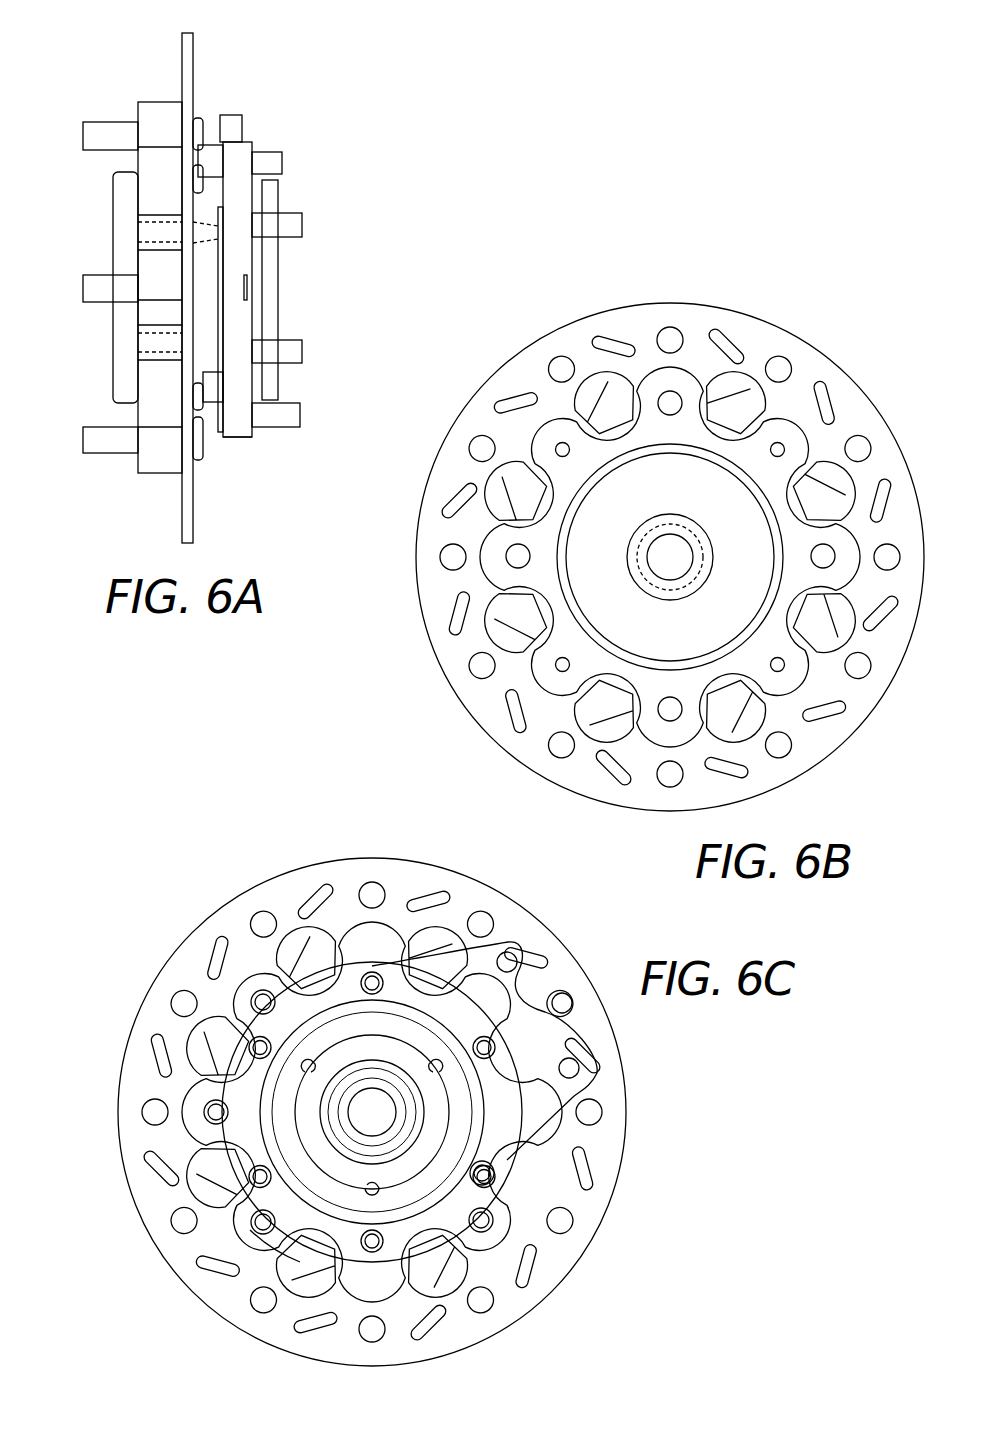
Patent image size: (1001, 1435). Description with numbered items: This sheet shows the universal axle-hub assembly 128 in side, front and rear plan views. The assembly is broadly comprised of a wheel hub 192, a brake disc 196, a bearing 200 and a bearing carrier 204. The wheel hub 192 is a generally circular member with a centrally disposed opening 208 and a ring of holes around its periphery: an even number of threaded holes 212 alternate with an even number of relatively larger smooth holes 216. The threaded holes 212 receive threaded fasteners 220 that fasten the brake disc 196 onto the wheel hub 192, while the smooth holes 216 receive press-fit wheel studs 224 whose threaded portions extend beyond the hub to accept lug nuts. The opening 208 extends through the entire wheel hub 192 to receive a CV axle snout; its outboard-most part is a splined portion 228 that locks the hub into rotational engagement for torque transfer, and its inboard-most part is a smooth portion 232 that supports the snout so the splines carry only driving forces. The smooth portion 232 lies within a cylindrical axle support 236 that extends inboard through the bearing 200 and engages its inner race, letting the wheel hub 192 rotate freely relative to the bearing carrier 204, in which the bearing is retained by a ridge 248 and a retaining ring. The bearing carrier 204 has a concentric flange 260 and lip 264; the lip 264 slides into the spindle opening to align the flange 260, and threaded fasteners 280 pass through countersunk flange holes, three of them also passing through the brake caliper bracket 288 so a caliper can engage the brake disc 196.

In FIG. 6A, the universal axle-hub assembly 128 is at (247, 56).
In FIG. 6B, the universal axle-hub assembly 128 is at (824, 318).
In FIG. 6C, the universal axle-hub assembly 128 is at (213, 858).
In FIG. 6A, the wheel hub 192 is at (148, 478).
In FIG. 6B, the wheel hub 192 is at (790, 505).
In FIG. 6A, the brake disc 196 is at (182, 58).
In FIG. 6B, the brake disc 196 is at (628, 305).
In FIG. 6C, the brake disc 196 is at (235, 1300).
In FIG. 6C, the bearing 200 is at (335, 1055).
In FIG. 6C, the bearing carrier 204 is at (467, 1122).
In FIG. 6B, the opening 208 is at (650, 565).
In FIG. 6C, the opening 208 is at (395, 1122).
In FIG. 6B, the threaded holes 212 is at (562, 443).
In FIG. 6B, the smooth holes 216 is at (672, 398).
In FIG. 6C, the threaded fasteners 220 is at (265, 1178).
In FIG. 6A, the wheel studs 224 is at (113, 266).
In FIG. 6B, the wheel studs 224 is at (520, 556).
In FIG. 6C, the wheel studs 224 is at (293, 1113).
In FIG. 6B, the splined portion 228 is at (662, 585).
In FIG. 6C, the smooth portion 232 is at (388, 1135).
In FIG. 6C, the axle support 236 is at (335, 1110).
In FIG. 6C, the ridge 248 is at (300, 1130).
In FIG. 6A, the flange 260 is at (238, 437).
In FIG. 6C, the flange 260 is at (310, 1250).
In FIG. 6A, the lip 264 is at (278, 300).
In FIG. 6C, the lip 264 is at (447, 1207).
In FIG. 6A, the threaded fasteners 280 is at (283, 165).
In FIG. 6C, the threaded fasteners 280 is at (372, 975).
In FIG. 6A, the brake caliper bracket 288 is at (242, 125).
In FIG. 6C, the brake caliper bracket 288 is at (520, 940).